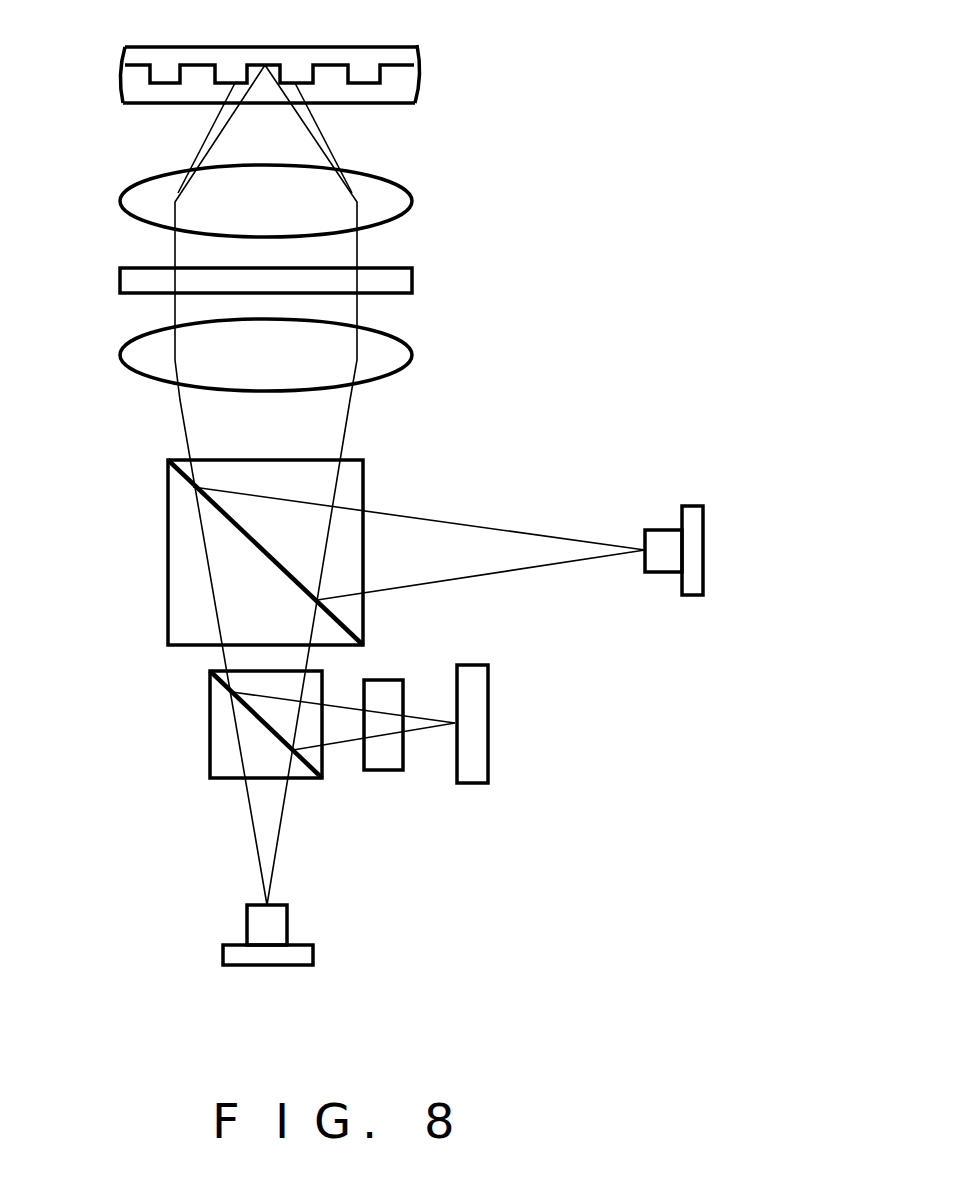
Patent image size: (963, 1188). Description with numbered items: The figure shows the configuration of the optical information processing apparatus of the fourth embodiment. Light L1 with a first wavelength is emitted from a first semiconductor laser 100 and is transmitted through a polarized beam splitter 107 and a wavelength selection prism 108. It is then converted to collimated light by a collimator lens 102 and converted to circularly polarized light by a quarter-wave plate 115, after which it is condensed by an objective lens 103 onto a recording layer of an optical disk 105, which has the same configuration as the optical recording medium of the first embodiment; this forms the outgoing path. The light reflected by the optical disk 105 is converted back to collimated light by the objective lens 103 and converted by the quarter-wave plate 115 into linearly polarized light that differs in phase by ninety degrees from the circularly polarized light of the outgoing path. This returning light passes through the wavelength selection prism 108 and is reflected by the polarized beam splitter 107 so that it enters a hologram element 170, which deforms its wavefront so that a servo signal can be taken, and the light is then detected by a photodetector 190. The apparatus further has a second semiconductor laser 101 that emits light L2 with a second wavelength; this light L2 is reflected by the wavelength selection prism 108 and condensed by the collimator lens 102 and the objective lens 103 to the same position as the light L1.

The first semiconductor laser 100 is at (255, 923).
The second semiconductor laser 101 is at (693, 530).
The collimator lens 102 is at (392, 358).
The objective lens 103 is at (392, 203).
The optical disk 105 is at (393, 53).
The polarized beam splitter 107 is at (223, 742).
The wavelength selection prism 108 is at (183, 545).
The quarter-wave plate 115 is at (392, 281).
The hologram element 170 is at (387, 763).
The photodetector 190 is at (477, 698).
The light L1 is at (222, 155).
The light L2 is at (312, 133).